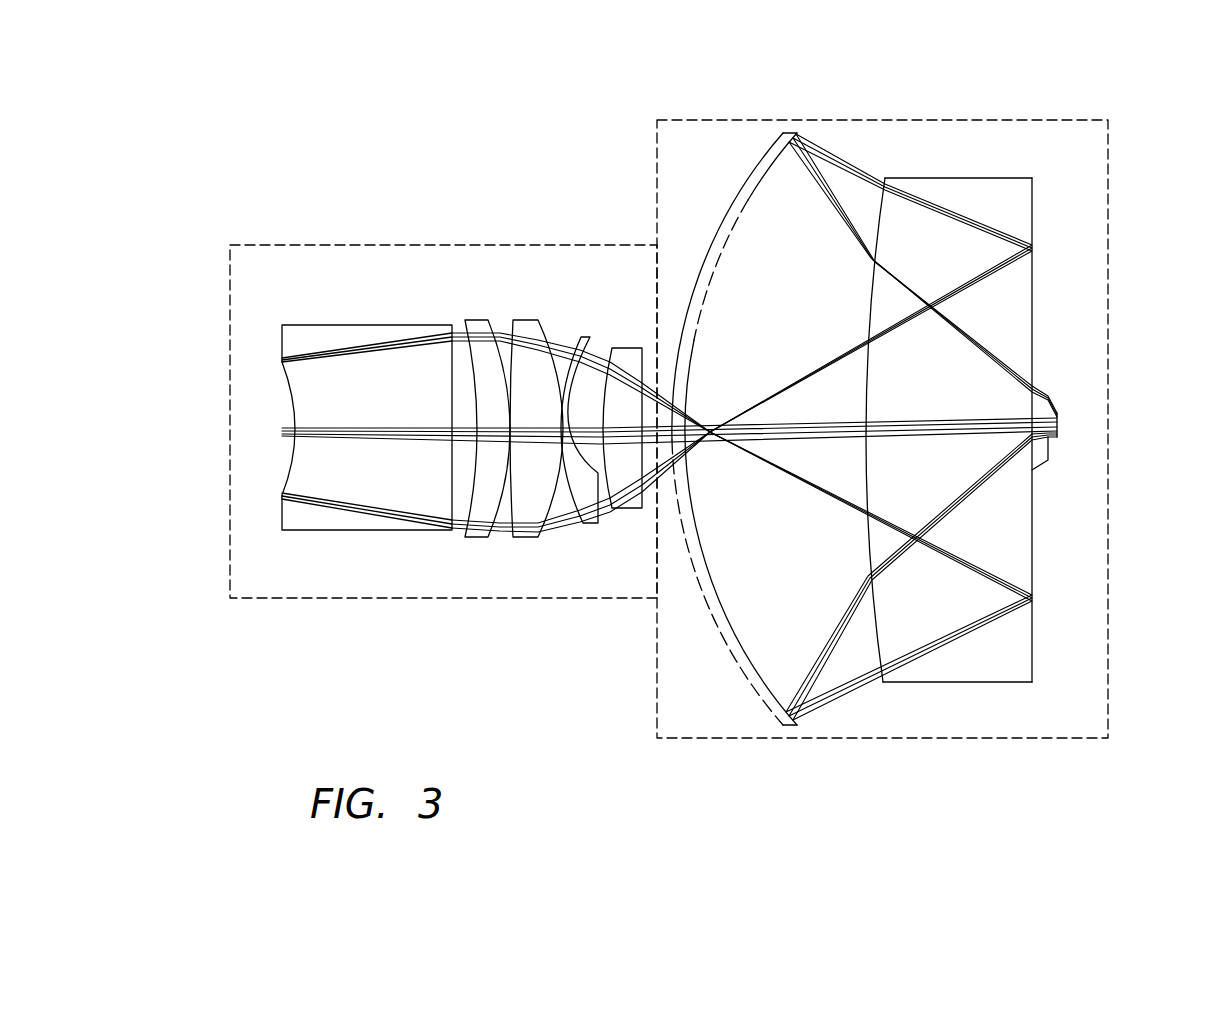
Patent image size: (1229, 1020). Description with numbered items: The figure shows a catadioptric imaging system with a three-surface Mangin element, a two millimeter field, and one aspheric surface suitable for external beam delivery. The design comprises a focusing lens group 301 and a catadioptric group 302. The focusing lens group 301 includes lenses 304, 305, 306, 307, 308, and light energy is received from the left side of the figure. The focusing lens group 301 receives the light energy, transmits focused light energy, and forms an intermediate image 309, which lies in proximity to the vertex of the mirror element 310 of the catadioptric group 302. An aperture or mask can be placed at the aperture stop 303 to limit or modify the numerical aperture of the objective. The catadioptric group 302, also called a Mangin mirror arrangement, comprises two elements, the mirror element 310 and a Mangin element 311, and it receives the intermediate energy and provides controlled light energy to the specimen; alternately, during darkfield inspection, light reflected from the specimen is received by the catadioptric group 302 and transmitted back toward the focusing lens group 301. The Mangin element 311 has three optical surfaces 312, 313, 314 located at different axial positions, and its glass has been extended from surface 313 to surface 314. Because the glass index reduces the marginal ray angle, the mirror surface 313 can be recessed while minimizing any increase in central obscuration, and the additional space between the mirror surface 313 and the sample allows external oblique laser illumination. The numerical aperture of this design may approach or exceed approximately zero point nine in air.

The focusing lens group 301 is at (413, 245).
The catadioptric group 302 is at (876, 120).
The aperture stop 303 is at (281, 360).
The lens 304 is at (338, 324).
The lens 305 is at (476, 320).
The lens 306 is at (528, 321).
The lens 307 is at (598, 336).
The lens 308 is at (633, 348).
The intermediate image 309 is at (713, 452).
The mirror element 310 is at (751, 175).
The Mangin element 311 is at (940, 178).
The optical surface 312 is at (867, 478).
The mirror surface 313 is at (1032, 545).
The optical surface 314 is at (1048, 460).